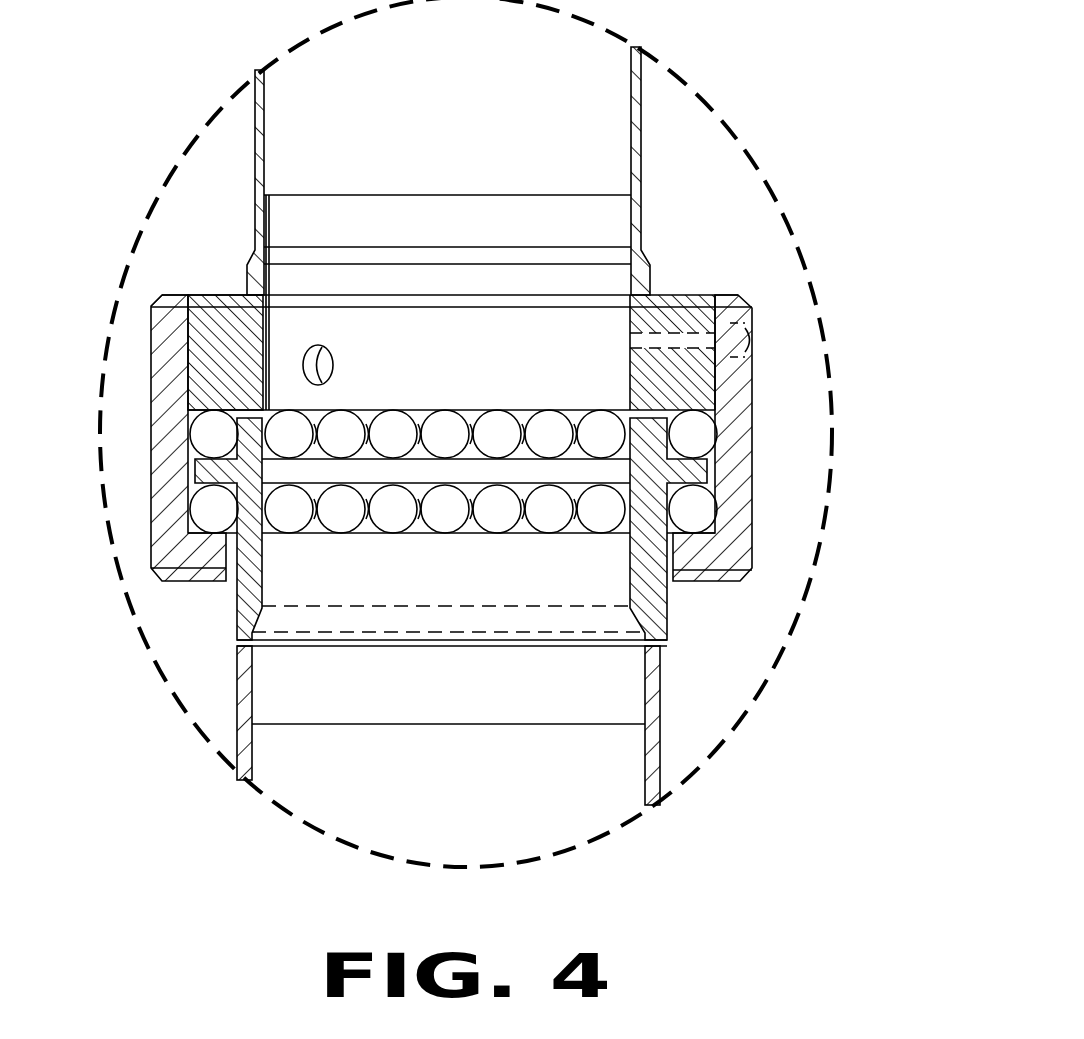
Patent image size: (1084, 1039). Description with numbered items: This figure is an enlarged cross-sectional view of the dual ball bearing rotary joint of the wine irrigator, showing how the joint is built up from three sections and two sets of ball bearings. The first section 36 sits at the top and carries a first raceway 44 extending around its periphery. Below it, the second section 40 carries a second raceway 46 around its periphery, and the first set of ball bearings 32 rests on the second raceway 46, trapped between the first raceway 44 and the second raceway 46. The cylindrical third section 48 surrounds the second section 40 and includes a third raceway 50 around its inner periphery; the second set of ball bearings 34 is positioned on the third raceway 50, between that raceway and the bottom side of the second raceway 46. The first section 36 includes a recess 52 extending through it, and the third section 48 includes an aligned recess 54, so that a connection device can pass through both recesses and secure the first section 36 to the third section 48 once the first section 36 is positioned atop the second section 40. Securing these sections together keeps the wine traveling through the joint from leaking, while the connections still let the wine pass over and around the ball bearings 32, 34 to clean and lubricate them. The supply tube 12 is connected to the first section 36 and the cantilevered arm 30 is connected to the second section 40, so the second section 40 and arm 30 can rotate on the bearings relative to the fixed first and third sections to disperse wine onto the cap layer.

The supply tube 12 is at (642, 135).
The cantilevered arm 30 is at (660, 775).
The first set of ball bearings 32 is at (695, 423).
The second set of ball bearings 34 is at (697, 510).
The first section 36 is at (753, 313).
The second section 40 is at (633, 610).
The first raceway 44 is at (695, 400).
The second raceway 46 is at (697, 462).
The third section 48 is at (745, 503).
The third raceway 50 is at (692, 568).
The recess 52 is at (672, 338).
The recess 54 is at (753, 343).